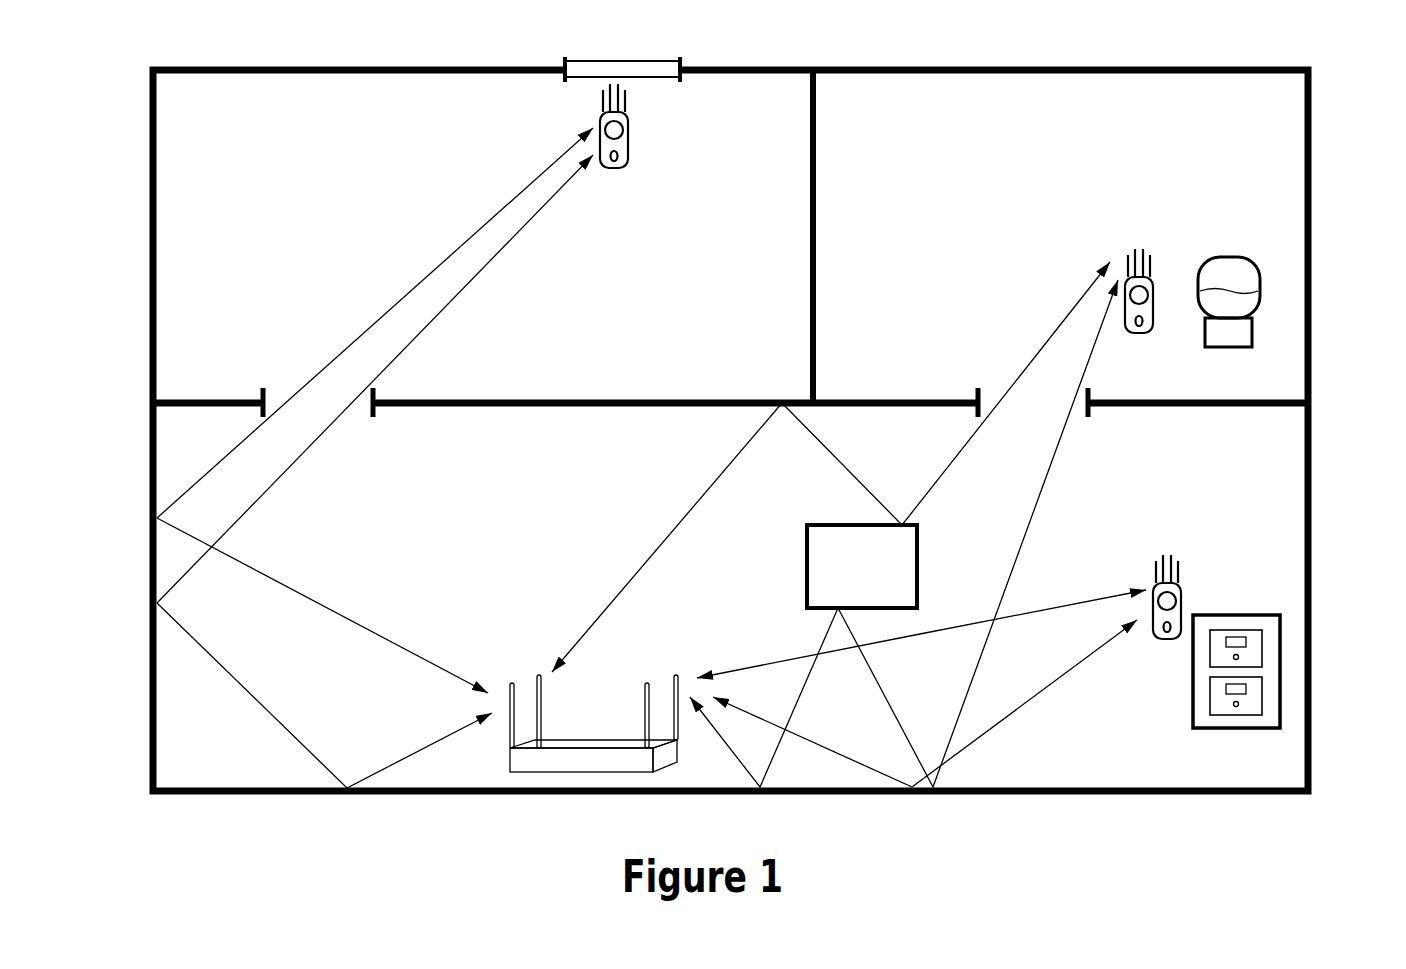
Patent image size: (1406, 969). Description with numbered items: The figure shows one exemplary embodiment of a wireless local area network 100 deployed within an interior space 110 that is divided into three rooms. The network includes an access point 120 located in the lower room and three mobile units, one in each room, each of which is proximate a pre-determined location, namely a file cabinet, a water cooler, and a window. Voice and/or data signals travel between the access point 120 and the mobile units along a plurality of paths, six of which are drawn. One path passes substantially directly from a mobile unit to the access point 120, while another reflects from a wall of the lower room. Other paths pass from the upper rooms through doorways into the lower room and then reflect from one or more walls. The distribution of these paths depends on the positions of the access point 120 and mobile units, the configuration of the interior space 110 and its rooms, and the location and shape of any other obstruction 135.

The wireless local area network 100 is at (108, 292).
The interior space 110 is at (845, 67).
The access point 120 is at (562, 746).
The obstruction 135 is at (881, 586).